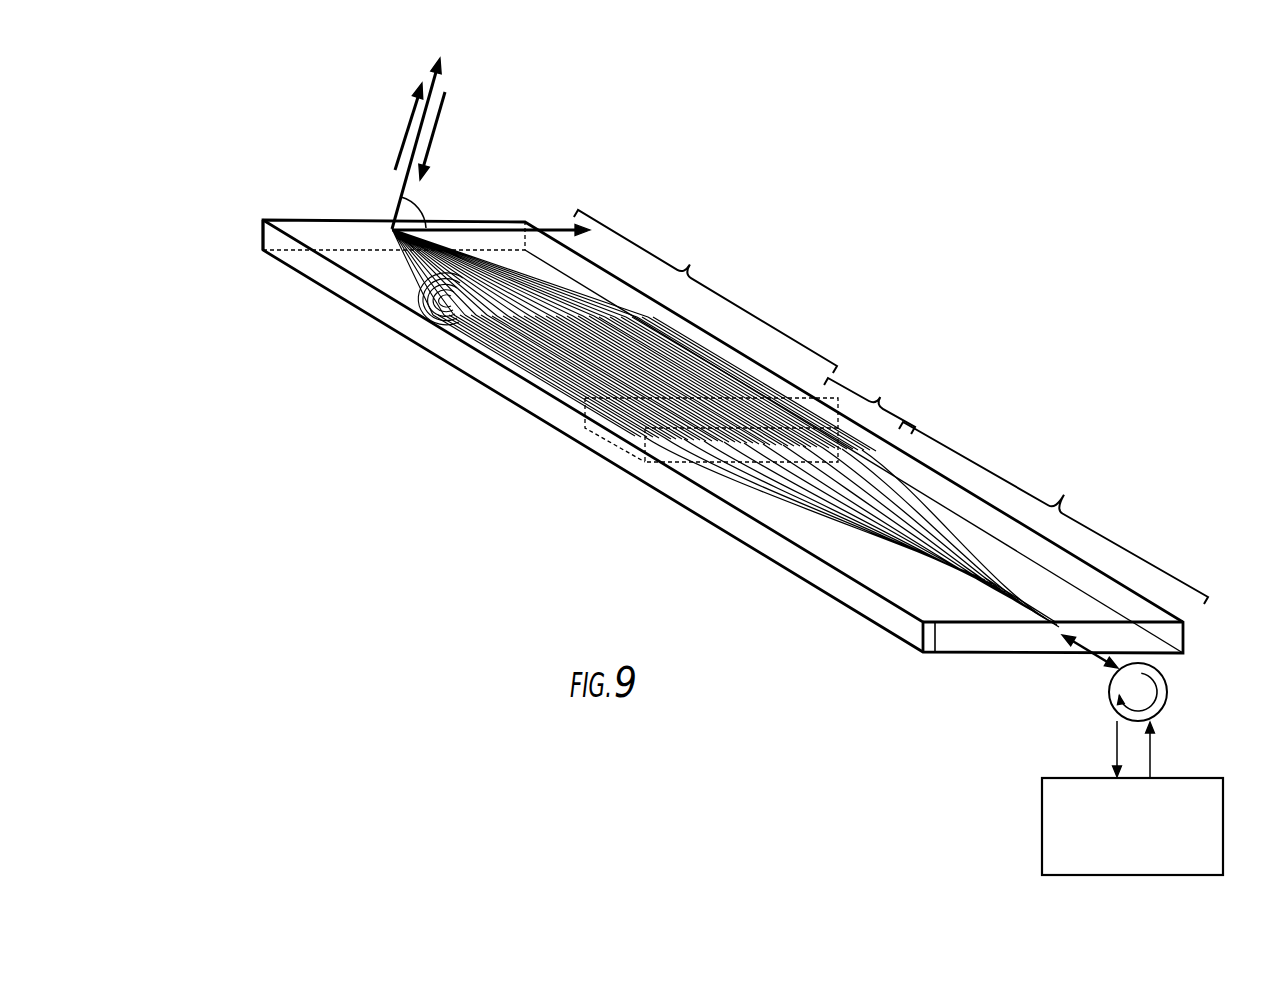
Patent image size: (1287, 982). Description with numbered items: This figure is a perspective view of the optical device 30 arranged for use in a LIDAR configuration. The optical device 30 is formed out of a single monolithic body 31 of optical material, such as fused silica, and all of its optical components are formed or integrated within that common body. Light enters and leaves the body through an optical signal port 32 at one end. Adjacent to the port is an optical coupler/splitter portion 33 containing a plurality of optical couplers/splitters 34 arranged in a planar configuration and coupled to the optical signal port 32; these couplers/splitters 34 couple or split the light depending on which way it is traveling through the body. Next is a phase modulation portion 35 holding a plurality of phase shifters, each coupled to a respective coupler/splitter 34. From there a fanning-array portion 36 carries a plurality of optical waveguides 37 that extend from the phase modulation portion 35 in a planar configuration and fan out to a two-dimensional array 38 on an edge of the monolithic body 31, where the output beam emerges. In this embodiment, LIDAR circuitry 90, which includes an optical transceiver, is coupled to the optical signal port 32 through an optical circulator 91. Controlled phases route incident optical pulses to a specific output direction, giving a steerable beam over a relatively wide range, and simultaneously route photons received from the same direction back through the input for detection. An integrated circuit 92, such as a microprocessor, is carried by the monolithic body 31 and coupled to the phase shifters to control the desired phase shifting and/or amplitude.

The optical device 30 is at (1008, 267).
The monolithic body 31 is at (935, 653).
The optical signal port 32 is at (1052, 665).
The optical coupler/splitter portion 33 is at (1053, 513).
The optical couplers/splitters 34 is at (850, 528).
The phase modulation portion 35 is at (871, 399).
The fanning-array portion 36 is at (705, 291).
The optical waveguides 37 is at (488, 348).
The two-dimensional array 38 is at (372, 207).
The LIDAR circuitry 90 is at (1224, 820).
The optical circulator 91 is at (1170, 693).
The integrated circuit 92 is at (593, 405).